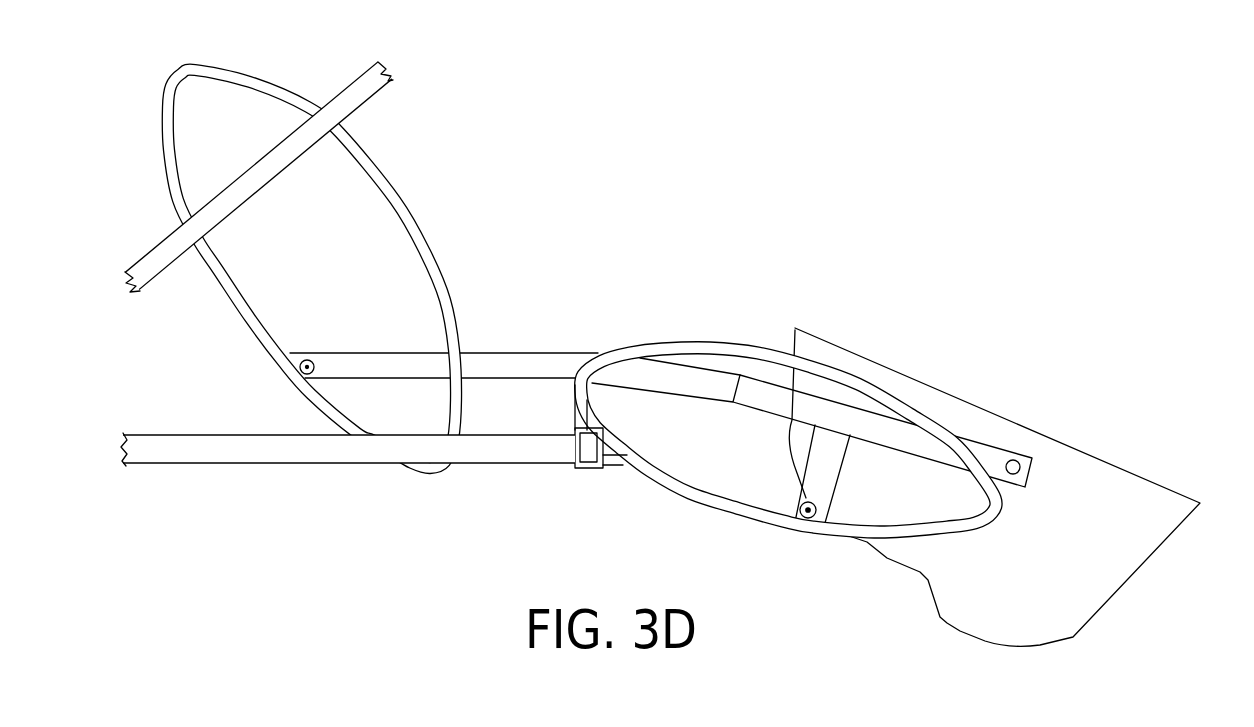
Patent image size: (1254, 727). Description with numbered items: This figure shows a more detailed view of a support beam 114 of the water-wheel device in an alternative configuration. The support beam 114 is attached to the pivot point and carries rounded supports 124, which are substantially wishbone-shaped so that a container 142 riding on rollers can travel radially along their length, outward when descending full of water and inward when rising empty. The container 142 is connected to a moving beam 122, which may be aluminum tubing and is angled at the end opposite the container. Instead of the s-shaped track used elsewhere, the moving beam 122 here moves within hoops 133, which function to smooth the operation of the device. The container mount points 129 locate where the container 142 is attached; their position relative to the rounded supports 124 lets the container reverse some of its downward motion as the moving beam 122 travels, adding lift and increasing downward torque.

The support beam 114 is at (257, 457).
The moving beam 122 is at (548, 358).
The rounded supports 124 is at (783, 529).
The container mount points 129 is at (1013, 459).
The hoops 133 is at (413, 202).
The container 142 is at (1110, 585).